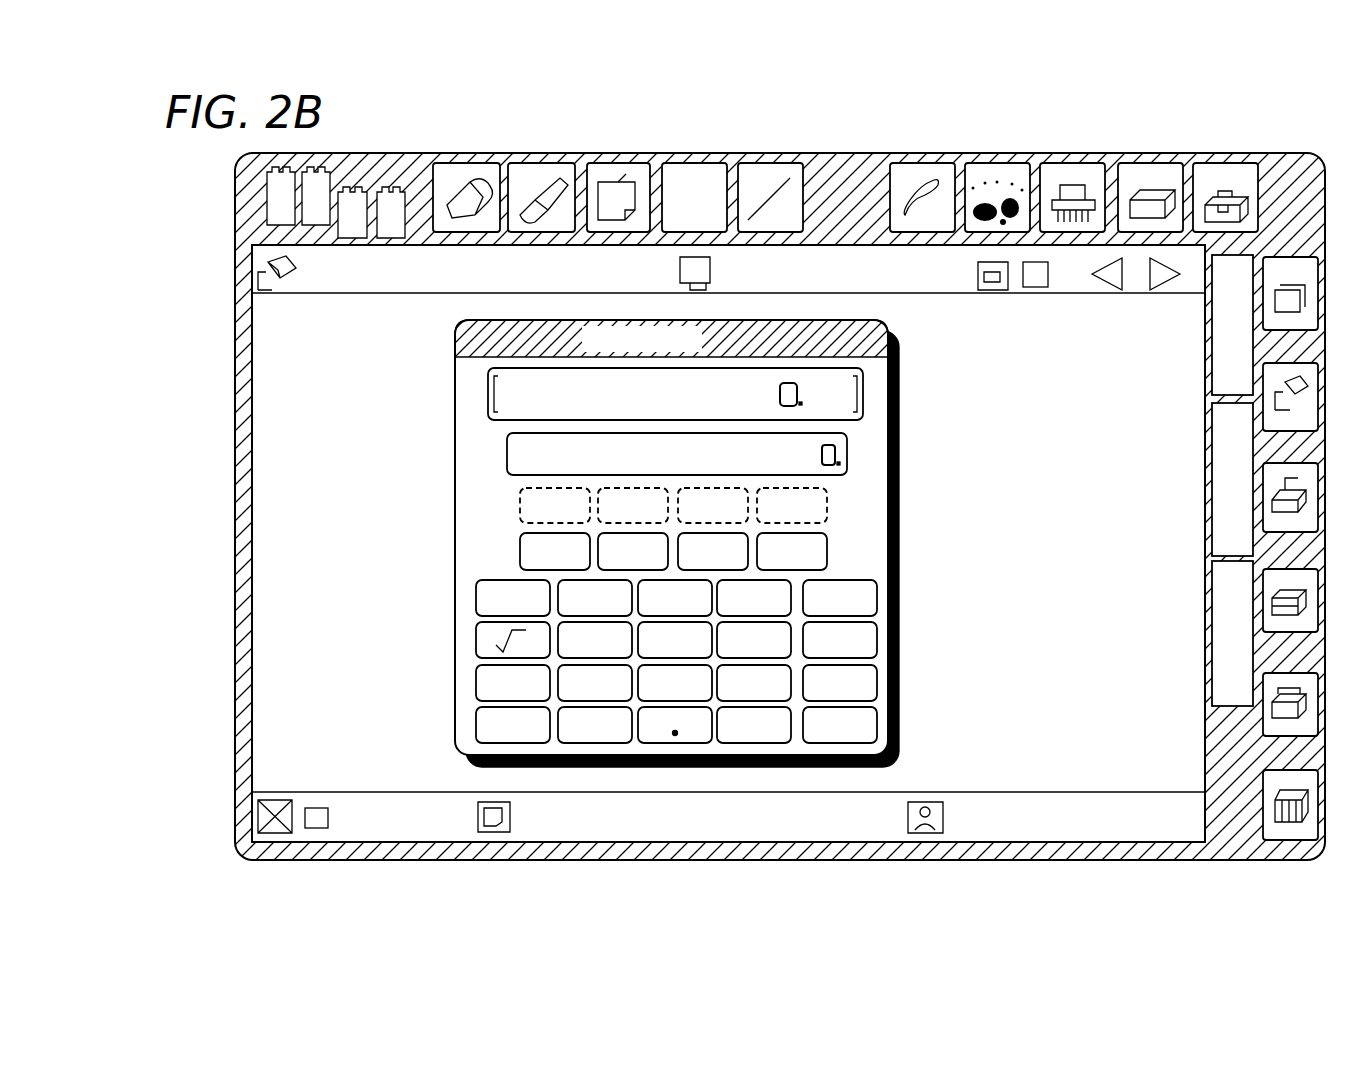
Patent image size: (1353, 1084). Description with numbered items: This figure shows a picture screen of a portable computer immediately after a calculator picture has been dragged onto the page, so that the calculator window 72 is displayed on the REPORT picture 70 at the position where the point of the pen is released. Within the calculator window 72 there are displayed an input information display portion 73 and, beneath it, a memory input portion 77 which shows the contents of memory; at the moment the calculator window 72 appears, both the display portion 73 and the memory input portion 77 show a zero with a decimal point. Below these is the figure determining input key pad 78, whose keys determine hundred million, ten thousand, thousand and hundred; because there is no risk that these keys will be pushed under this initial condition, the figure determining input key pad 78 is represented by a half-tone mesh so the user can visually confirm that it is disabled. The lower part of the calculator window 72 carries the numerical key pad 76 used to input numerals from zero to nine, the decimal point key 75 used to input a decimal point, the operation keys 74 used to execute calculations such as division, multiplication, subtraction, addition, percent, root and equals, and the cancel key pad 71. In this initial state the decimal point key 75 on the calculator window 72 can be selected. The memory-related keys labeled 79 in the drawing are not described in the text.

The REPORT picture 70 is at (1133, 830).
The cancel key pad 71 is at (452, 662).
The calculator window 72 is at (897, 627).
The input information display portion 73 is at (840, 395).
The operation keys 74 is at (452, 575).
The decimal point key 75 is at (684, 738).
The numerical key pad 76 is at (612, 738).
The memory input portion 77 is at (527, 455).
The figure determining input key pad 78 is at (527, 508).
The memory keys 79 is at (827, 550).